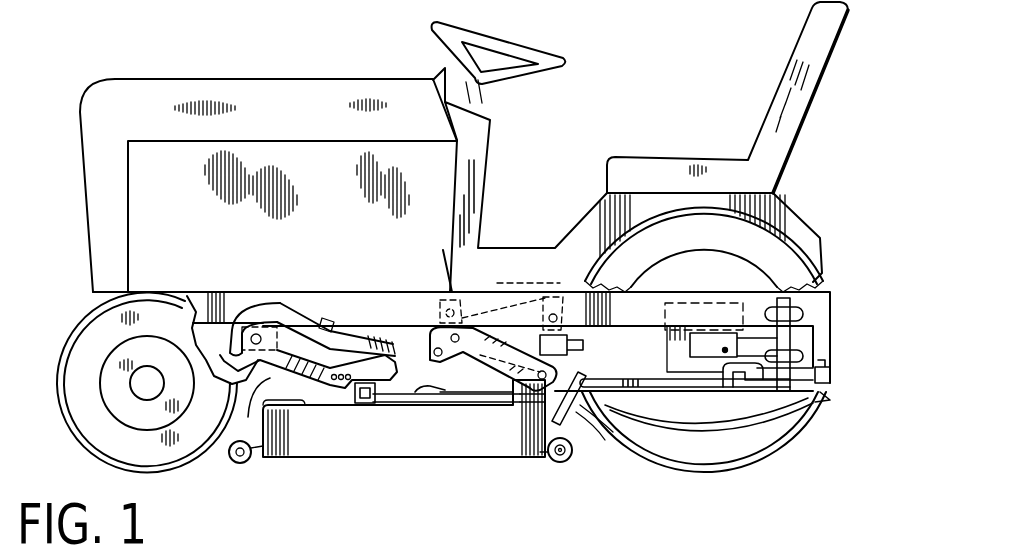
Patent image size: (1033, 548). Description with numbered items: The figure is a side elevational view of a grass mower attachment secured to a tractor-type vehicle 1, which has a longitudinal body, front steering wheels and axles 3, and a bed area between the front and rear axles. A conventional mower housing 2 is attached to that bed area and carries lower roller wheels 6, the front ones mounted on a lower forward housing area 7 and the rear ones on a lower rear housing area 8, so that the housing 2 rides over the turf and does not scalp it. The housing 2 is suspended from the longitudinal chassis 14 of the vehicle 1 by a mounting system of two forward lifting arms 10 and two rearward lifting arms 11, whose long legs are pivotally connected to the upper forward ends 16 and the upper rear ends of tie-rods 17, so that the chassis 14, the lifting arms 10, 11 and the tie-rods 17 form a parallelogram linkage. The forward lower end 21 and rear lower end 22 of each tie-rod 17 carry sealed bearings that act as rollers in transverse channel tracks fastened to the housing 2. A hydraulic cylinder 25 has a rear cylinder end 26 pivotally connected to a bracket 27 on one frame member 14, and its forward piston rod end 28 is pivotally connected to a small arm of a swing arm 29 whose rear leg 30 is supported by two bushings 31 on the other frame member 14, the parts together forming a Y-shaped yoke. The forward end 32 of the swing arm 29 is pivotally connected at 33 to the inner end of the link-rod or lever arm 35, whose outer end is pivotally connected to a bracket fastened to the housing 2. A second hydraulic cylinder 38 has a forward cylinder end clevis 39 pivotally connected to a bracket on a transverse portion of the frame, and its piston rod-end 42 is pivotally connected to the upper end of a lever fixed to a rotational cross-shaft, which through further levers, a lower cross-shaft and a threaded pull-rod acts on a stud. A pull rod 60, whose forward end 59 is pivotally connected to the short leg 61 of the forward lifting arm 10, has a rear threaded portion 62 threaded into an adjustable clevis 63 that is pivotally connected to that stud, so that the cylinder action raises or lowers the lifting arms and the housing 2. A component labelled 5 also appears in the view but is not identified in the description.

The vehicle 1 is at (165, 79).
The mower housing 2 is at (420, 446).
The front steering wheels and axles 3 is at (70, 335).
The front hanger bracket 5 is at (267, 380).
The lower roller wheels 6 is at (248, 453).
The lower forward housing area 7 is at (283, 440).
The lower rear housing area 8 is at (487, 415).
The forward lifting arms 10 is at (290, 318).
The rearward lifting arms 11 is at (470, 402).
The longitudinal chassis 14 is at (350, 300).
The upper forward ends of tie-rods 16 is at (303, 403).
The tie-rods 17 is at (440, 402).
The forward lower end of tie-rod 21 is at (367, 403).
The rear lower end of tie-rod 22 is at (525, 402).
The hydraulic cylinder 25 is at (820, 402).
The rear cylinder end 26 is at (835, 382).
The bracket 27 is at (833, 375).
The forward piston rod end 28 is at (780, 403).
The swing arm 29 is at (690, 395).
The rear leg of swing arm 30 is at (788, 325).
The bushings 31 is at (787, 368).
The forward end of swing arm 32 is at (590, 385).
The pivotal connection 33 is at (607, 417).
The link-rod 35 is at (590, 413).
The hydraulic cylinder 38 is at (498, 292).
The forward cylinder end clevis 39 is at (443, 250).
The piston rod-end 42 is at (545, 300).
The forward end of pull rod 59 is at (215, 292).
The pull rod 60 is at (330, 320).
The short leg of forward lifting arm 61 is at (217, 347).
The rear threaded portion of pull rod 62 is at (386, 302).
The adjustable clevis 63 is at (473, 292).